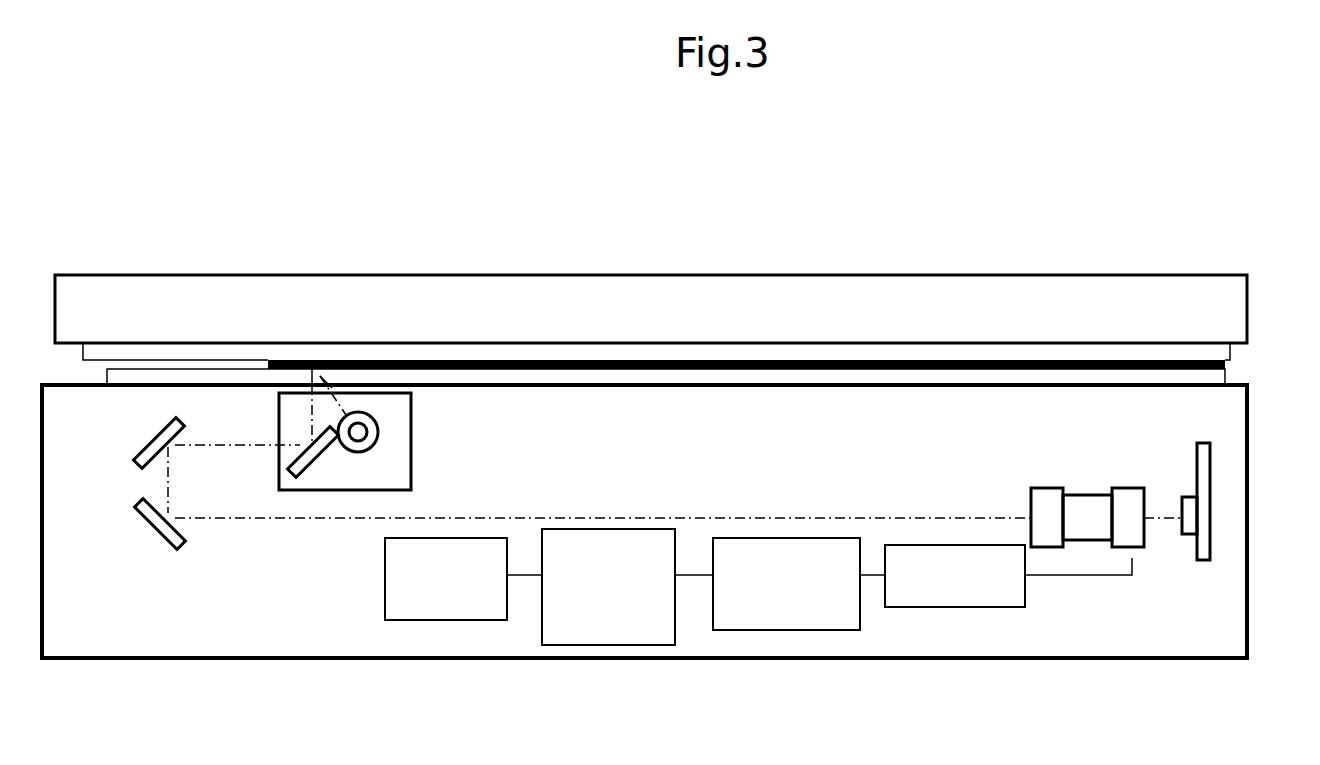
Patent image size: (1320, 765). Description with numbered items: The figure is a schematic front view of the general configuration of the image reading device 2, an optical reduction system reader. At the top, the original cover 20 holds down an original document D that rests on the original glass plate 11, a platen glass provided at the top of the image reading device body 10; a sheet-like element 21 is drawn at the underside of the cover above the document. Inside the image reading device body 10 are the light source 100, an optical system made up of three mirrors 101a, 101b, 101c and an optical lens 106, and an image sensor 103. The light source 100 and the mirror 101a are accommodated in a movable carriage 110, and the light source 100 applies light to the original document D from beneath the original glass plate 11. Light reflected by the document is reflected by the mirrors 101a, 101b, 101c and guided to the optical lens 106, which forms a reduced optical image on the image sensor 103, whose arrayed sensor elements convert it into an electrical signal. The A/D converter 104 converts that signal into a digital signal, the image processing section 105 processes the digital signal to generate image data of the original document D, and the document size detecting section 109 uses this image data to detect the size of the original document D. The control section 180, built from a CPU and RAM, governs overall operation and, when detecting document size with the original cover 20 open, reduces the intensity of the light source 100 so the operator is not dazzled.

The image reading device 2 is at (1203, 183).
The original cover 20 is at (643, 275).
The pressing plate 21 is at (1233, 350).
The original document D is at (1228, 365).
The original glass plate 11 is at (1232, 380).
The image reading device body 10 is at (632, 660).
The movable carriage 110 is at (411, 462).
The light source 100 is at (380, 430).
The mirror 101a is at (330, 462).
The mirror 101b is at (143, 445).
The mirror 101c is at (150, 545).
The optical lens 106 is at (1075, 493).
The image sensor 103 is at (1197, 450).
The A/D converter 104 is at (925, 545).
The image processing section 105 is at (800, 538).
The document size detecting section 109 is at (625, 529).
The control section 180 is at (385, 575).